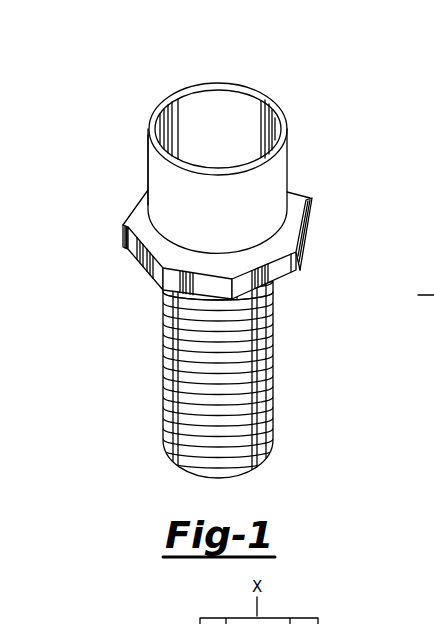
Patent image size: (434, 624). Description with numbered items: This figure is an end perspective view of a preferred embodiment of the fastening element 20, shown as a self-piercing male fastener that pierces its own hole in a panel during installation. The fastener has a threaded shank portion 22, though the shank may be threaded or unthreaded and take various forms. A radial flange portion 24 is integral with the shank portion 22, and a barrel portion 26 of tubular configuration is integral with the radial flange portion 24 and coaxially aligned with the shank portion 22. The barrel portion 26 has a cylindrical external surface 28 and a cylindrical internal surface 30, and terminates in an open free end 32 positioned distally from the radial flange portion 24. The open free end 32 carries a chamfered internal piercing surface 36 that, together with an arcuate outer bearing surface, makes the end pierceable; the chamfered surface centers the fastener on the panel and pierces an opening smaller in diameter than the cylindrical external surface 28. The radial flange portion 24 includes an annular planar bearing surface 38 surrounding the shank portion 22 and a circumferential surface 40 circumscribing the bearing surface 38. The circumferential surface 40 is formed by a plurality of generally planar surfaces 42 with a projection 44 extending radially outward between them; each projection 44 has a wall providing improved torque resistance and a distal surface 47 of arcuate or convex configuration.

The fastening element 20 is at (216, 381).
The threaded shank portion 22 is at (230, 398).
The radial flange portion 24 is at (212, 242).
The barrel portion 26 is at (226, 131).
The cylindrical external surface 28 is at (152, 178).
The cylindrical internal surface 30 is at (205, 107).
The open free end 32 is at (242, 92).
The chamfered internal piercing surface 36 is at (226, 86).
The annular planar bearing surface 38 is at (293, 291).
The circumferential surface 40 is at (318, 212).
The planar surfaces 42 is at (152, 263).
The projection 44 is at (252, 297).
The distal surface 47 is at (303, 265).